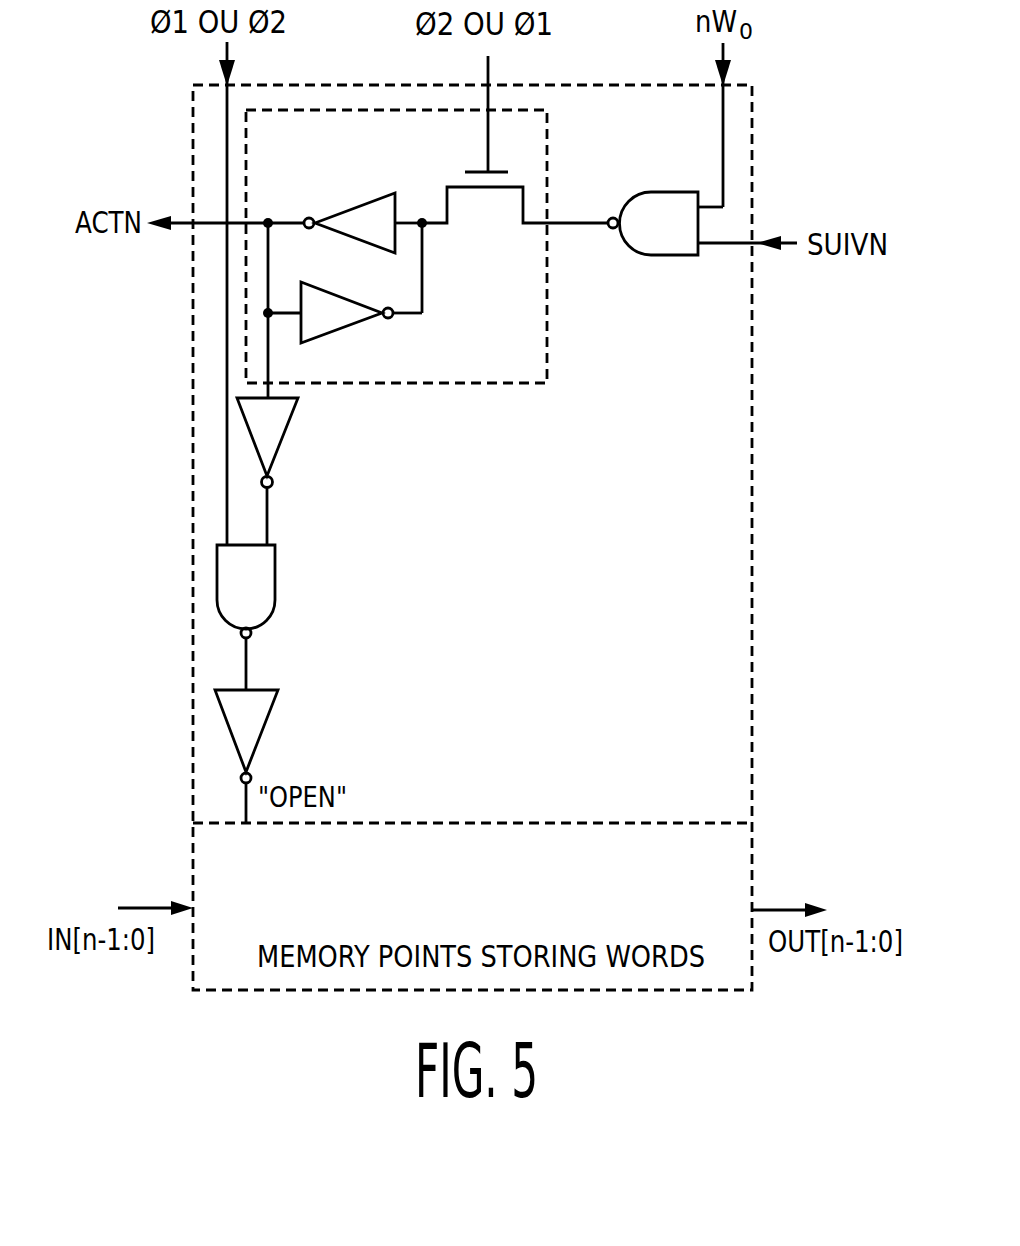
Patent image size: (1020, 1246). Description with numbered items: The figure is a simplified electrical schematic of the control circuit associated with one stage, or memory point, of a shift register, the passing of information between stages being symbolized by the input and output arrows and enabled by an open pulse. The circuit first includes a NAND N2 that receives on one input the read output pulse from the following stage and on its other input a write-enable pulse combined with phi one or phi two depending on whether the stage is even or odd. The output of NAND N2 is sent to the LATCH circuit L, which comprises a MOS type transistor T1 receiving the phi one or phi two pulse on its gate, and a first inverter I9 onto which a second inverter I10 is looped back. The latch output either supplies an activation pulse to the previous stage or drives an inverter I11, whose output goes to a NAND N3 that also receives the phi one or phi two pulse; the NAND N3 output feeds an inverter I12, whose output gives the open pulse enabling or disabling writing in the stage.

The LATCH circuit L is at (517, 384).
The first inverter I9 is at (374, 208).
The second inverter I10 is at (333, 322).
The inverter I11 is at (273, 433).
The inverter I12 is at (255, 722).
The MOS type transistor T1 is at (460, 183).
The NAND N2 is at (683, 198).
The NAND circuit N3 is at (267, 575).